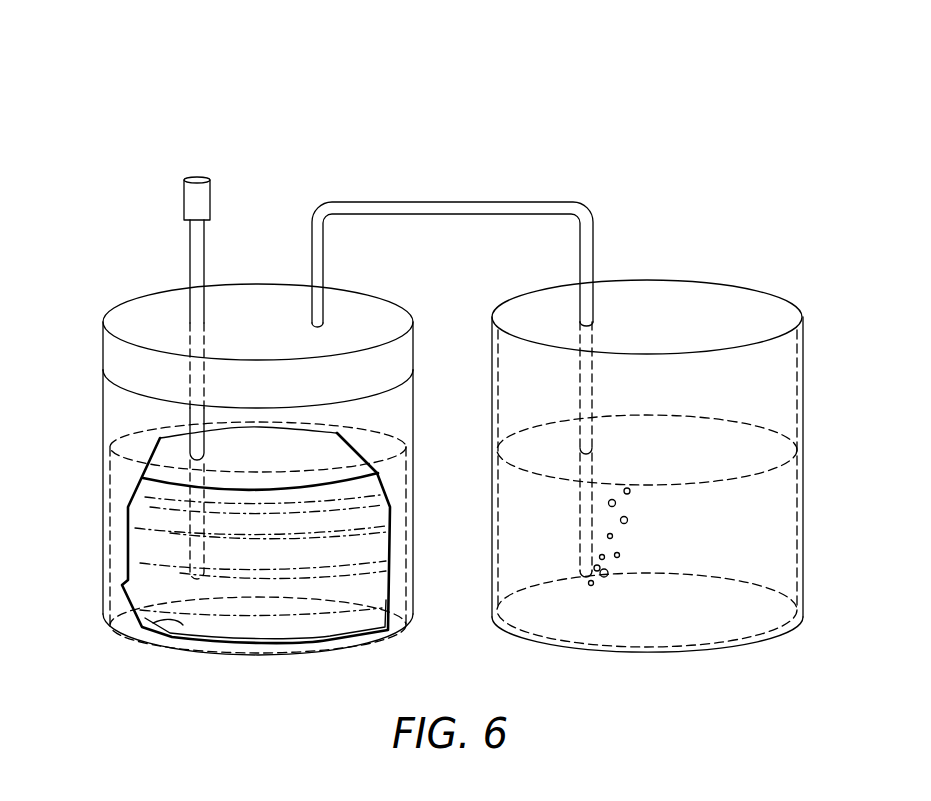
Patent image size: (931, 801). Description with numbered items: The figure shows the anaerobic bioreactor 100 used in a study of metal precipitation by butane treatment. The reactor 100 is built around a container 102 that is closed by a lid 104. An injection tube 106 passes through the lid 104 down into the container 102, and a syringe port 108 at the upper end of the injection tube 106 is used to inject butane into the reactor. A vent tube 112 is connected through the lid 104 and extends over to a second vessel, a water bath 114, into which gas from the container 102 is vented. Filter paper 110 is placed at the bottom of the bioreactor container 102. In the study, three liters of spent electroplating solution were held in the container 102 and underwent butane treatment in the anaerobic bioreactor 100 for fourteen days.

The anaerobic bioreactor 100 is at (311, 123).
The container 102 is at (103, 550).
The lid 104 is at (104, 357).
The injection tube 106 is at (195, 257).
The syringe port 108 is at (186, 196).
The filter paper 110 is at (152, 632).
The vent tube 112 is at (463, 205).
The water bath 114 is at (780, 534).